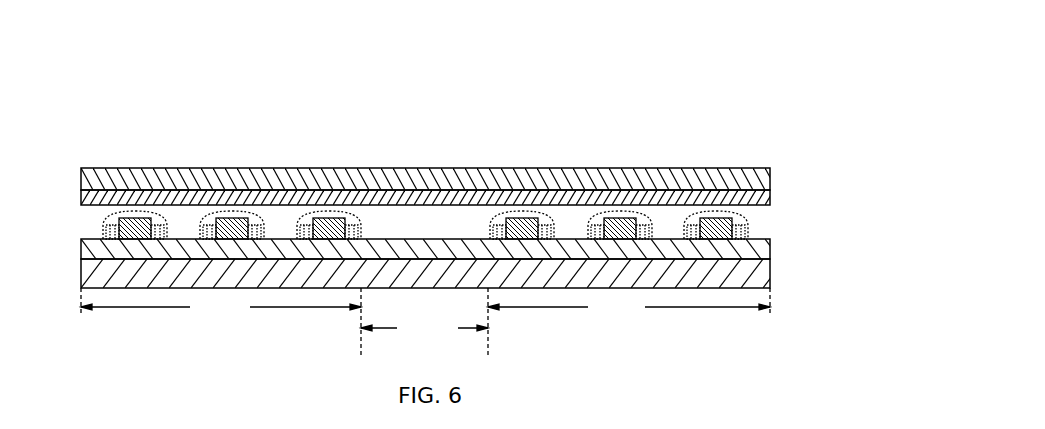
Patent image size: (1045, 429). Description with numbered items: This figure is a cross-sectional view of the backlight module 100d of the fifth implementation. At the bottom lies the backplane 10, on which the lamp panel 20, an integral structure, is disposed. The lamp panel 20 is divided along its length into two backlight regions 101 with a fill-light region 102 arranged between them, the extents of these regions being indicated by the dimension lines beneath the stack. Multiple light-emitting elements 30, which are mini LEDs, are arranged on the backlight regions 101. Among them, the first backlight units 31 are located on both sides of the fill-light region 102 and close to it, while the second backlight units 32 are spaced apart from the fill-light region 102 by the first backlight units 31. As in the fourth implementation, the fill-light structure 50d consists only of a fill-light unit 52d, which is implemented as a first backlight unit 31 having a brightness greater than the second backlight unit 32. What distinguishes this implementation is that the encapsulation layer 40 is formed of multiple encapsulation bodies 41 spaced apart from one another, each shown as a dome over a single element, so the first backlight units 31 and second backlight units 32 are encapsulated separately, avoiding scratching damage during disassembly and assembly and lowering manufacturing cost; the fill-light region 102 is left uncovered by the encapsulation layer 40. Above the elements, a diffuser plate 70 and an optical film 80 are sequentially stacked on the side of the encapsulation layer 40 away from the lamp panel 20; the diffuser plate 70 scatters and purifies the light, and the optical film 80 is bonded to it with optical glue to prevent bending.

The backlight module 100d is at (182, 106).
The backplane 10 is at (743, 275).
The lamp panel 20 is at (740, 252).
The light-emitting elements 30 is at (632, 100).
The first backlight units 31 is at (513, 218).
The second backlight units 32 is at (614, 214).
The encapsulation layer 40 is at (692, 213).
The encapsulation bodies 41 is at (488, 222).
The color conversion layer 50d is at (307, 168).
The color conversion portion 52d is at (335, 218).
The diffuser plate 70 is at (753, 200).
The optical film 80 is at (753, 180).
The backlight regions 101 is at (425, 303).
The fill-light regions 102 is at (424, 321).